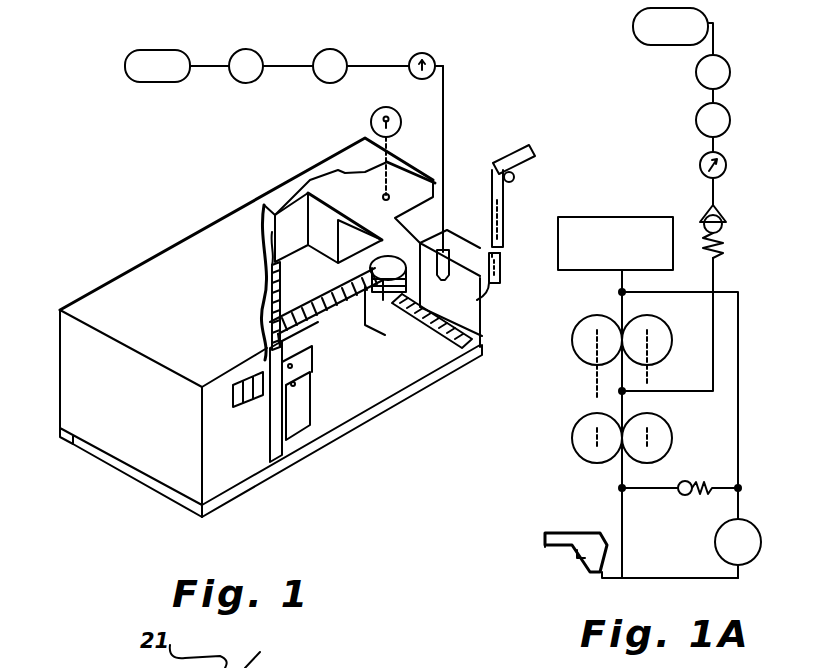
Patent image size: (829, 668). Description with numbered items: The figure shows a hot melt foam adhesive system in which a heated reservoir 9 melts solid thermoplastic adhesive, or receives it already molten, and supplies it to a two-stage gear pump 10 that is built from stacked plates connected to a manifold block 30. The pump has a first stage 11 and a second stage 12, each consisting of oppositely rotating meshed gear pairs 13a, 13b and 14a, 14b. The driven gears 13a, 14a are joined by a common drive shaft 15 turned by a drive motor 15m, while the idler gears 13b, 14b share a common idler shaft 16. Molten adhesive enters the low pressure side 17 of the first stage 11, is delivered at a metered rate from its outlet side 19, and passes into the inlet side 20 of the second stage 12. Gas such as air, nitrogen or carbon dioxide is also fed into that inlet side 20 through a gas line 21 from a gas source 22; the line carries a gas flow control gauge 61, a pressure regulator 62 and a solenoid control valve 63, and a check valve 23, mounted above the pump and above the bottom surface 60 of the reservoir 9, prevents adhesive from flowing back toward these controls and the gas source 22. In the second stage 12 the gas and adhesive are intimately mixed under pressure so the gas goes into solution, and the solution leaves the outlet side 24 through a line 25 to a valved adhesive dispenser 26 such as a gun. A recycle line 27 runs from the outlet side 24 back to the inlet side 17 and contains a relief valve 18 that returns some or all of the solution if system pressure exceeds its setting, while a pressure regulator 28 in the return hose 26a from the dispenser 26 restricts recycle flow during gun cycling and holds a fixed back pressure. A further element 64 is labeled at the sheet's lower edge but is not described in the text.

In FIG. 1, the heated reservoir 9 is at (308, 248).
In FIG. 1A, the heated reservoir 9 is at (632, 214).
In FIG. 1, the two-stage gear pump 10 is at (364, 272).
In FIG. 1A, the two-stage gear pump 10 is at (540, 352).
In FIG. 1A, the first stage 11 is at (564, 341).
In FIG. 1A, the second stage 12 is at (564, 444).
In FIG. 1A, the driven gear 13a is at (588, 322).
In FIG. 1A, the idler gear 13b is at (668, 335).
In FIG. 1A, the driven gear 14a is at (585, 455).
In FIG. 1A, the idler gear 14b is at (668, 447).
In FIG. 1, the common drive shaft 15 is at (398, 162).
In FIG. 1A, the common drive shaft 15 is at (597, 387).
In FIG. 1, the drive motor 15m is at (372, 112).
In FIG. 1A, the common idler shaft 16 is at (648, 378).
In FIG. 1A, the low pressure side 17 is at (630, 318).
In FIG. 1A, the relief valve 18 is at (682, 507).
In FIG. 1A, the outlet side 19 is at (617, 356).
In FIG. 1A, the inlet side 20 is at (616, 418).
In FIG. 1, the gas line 21 is at (447, 85).
In FIG. 1A, the gas line 21 is at (720, 284).
In FIG. 1, the gas source 22 is at (156, 50).
In FIG. 1A, the gas source 22 is at (697, 14).
In FIG. 1, the check valve 23 is at (456, 249).
In FIG. 1A, the check valve 23 is at (742, 234).
In FIG. 1A, the outlet side 24 is at (618, 466).
In FIG. 1, the line 25 is at (503, 264).
In FIG. 1A, the line 25 is at (624, 548).
In FIG. 1, the valved adhesive dispenser 26 is at (506, 152).
In FIG. 1A, the valved adhesive dispenser 26 is at (560, 547).
In FIG. 1, the return hose 26a is at (512, 224).
In FIG. 1A, the return hose 26a is at (697, 580).
In FIG. 1A, the recycle line 27 is at (778, 378).
In FIG. 1A, the pressure regulator 28 is at (770, 530).
In FIG. 1, the manifold block 30 is at (490, 322).
In FIG. 1, the bottom surface 60 is at (411, 338).
In FIG. 1, the gas flow control gauge 61 is at (442, 40).
In FIG. 1A, the gas flow control gauge 61 is at (727, 165).
In FIG. 1, the pressure regulator 62 is at (337, 51).
In FIG. 1A, the pressure regulator 62 is at (731, 120).
In FIG. 1, the solenoid control valve 63 is at (266, 40).
In FIG. 1A, the solenoid control valve 63 is at (731, 72).
In FIG. 1, the valve 64 is at (235, 649).